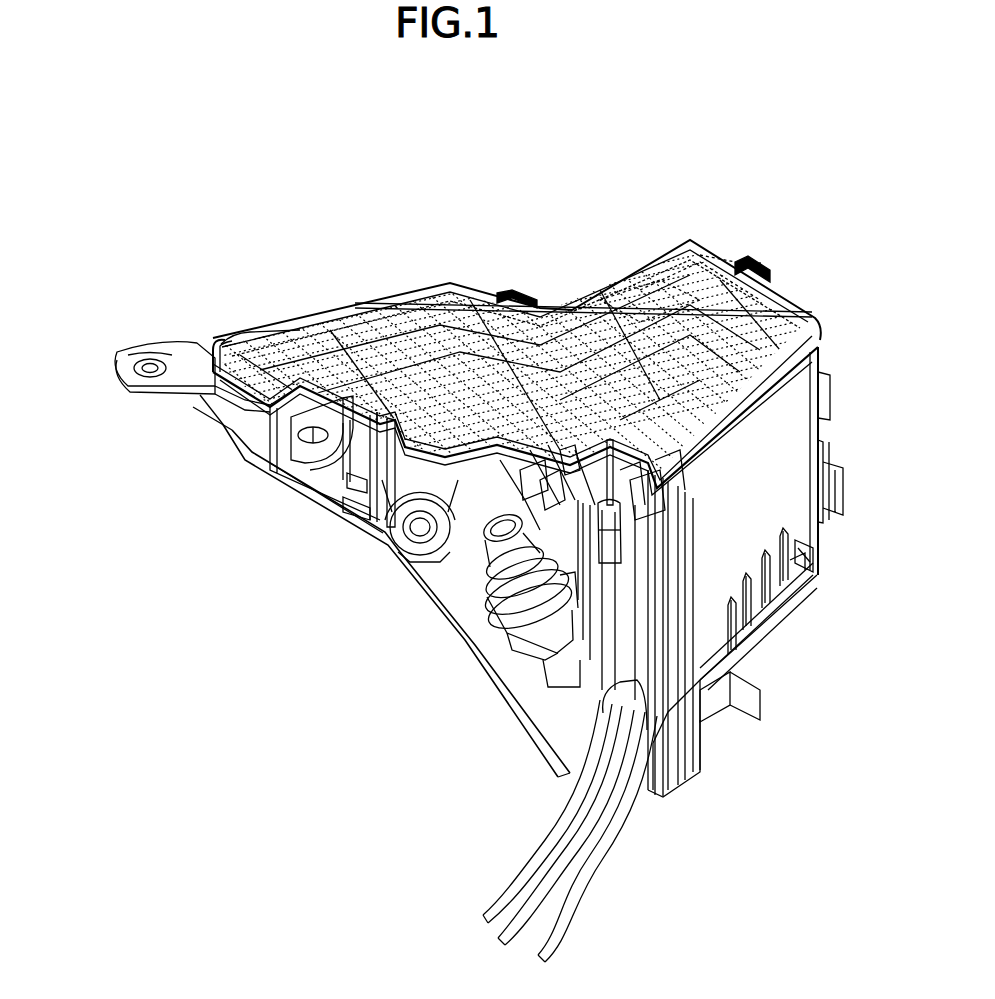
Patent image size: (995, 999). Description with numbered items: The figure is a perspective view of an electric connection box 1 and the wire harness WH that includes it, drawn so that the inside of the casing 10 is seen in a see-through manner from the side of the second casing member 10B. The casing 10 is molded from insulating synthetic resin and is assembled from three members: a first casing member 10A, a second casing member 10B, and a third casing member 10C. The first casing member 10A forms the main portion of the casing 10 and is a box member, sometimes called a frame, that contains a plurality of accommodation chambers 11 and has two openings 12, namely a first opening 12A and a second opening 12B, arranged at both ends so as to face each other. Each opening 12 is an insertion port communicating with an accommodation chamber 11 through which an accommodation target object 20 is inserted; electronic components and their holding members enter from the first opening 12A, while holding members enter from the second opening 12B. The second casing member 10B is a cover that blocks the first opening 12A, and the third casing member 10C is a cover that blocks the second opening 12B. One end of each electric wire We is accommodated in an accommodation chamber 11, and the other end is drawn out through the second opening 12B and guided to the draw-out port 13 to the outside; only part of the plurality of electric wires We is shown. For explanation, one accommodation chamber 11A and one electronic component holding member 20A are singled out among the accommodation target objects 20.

The electric connection box 1 is at (480, 212).
The wire harness WH is at (343, 186).
The casing 10 is at (287, 538).
The first casing member 10A is at (215, 390).
The second casing member 10B is at (282, 326).
The third casing member 10C is at (318, 488).
The accommodation chamber 11 is at (380, 325).
The accommodation chamber 11A is at (625, 292).
The opening 12 is at (758, 672).
The first opening 12A is at (705, 252).
The second opening 12B is at (620, 735).
The draw-out port 13 is at (590, 718).
The accommodation target object 20 is at (335, 325).
The electronic component holding member 20A is at (648, 300).
The electric wire We is at (540, 920).